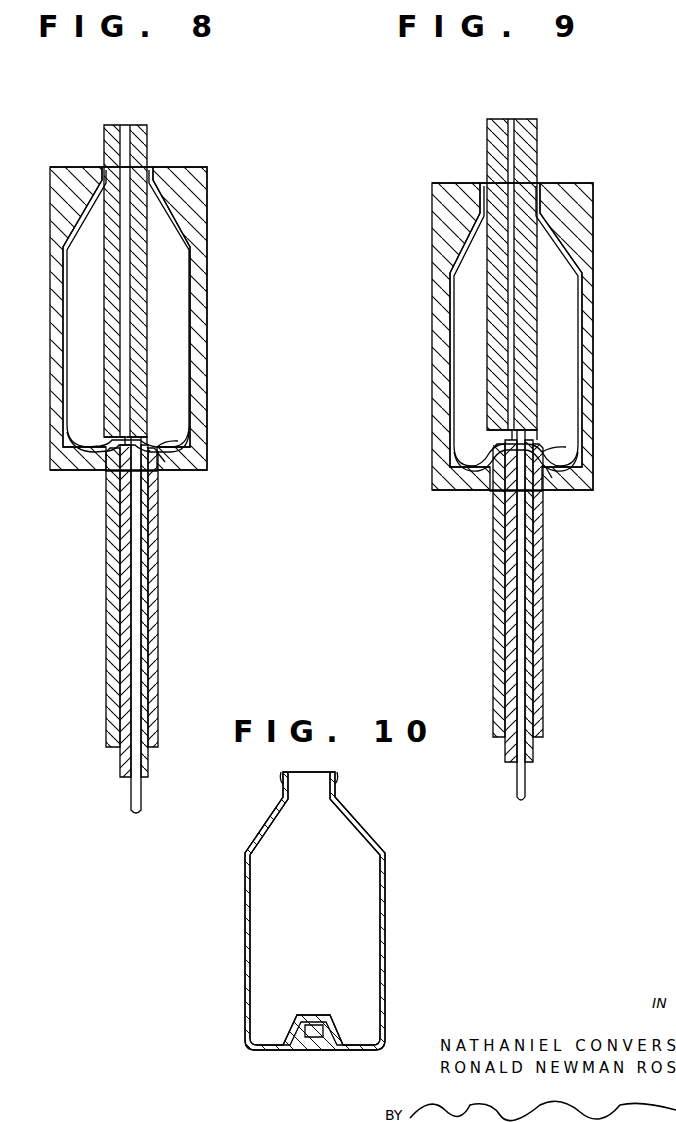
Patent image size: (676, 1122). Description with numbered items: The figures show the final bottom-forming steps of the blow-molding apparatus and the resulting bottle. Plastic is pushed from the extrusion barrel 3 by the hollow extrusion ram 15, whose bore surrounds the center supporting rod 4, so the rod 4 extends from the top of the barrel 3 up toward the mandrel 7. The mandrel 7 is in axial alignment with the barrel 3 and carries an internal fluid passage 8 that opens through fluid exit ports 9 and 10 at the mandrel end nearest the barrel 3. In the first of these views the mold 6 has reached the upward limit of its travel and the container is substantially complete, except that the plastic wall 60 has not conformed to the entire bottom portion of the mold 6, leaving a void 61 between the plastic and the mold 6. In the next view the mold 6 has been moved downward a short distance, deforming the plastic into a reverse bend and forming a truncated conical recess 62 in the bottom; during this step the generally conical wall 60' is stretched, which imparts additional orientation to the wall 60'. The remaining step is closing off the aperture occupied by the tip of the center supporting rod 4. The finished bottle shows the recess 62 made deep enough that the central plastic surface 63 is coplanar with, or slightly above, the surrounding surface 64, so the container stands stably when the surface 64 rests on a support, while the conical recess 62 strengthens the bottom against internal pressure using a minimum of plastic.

In FIG. 8, the extrusion barrel 3 is at (158, 556).
In FIG. 9, the extrusion barrel 3 is at (543, 580).
In FIG. 8, the center supporting rod 4 is at (131, 797).
In FIG. 9, the center supporting rod 4 is at (525, 790).
In FIG. 8, the mold 6 is at (50, 380).
In FIG. 9, the mold 6 is at (432, 380).
In FIG. 8, the mandrel 7 is at (108, 285).
In FIG. 9, the mandrel 7 is at (490, 315).
In FIG. 8, the fluid passage 8 is at (123, 128).
In FIG. 9, the fluid passage 8 is at (509, 122).
In FIG. 8, the fluid exit port 9 is at (106, 436).
In FIG. 9, the fluid exit port 9 is at (490, 432).
In FIG. 8, the fluid exit port 10 is at (149, 437).
In FIG. 9, the fluid exit port 10 is at (538, 432).
In FIG. 8, the hollow extrusion ram 15 is at (148, 760).
In FIG. 9, the hollow extrusion ram 15 is at (533, 754).
In FIG. 8, the plastic wall 60 is at (197, 423).
In FIG. 9, the generally conical wall 60' is at (585, 435).
In FIG. 8, the void 61 is at (163, 462).
In FIG. 9, the truncated conical recess 62 is at (552, 480).
In FIG. 10, the truncated conical recess 62 is at (298, 1030).
In FIG. 10, the plastic surface 63 is at (320, 1037).
In FIG. 10, the surface 64 is at (350, 1048).